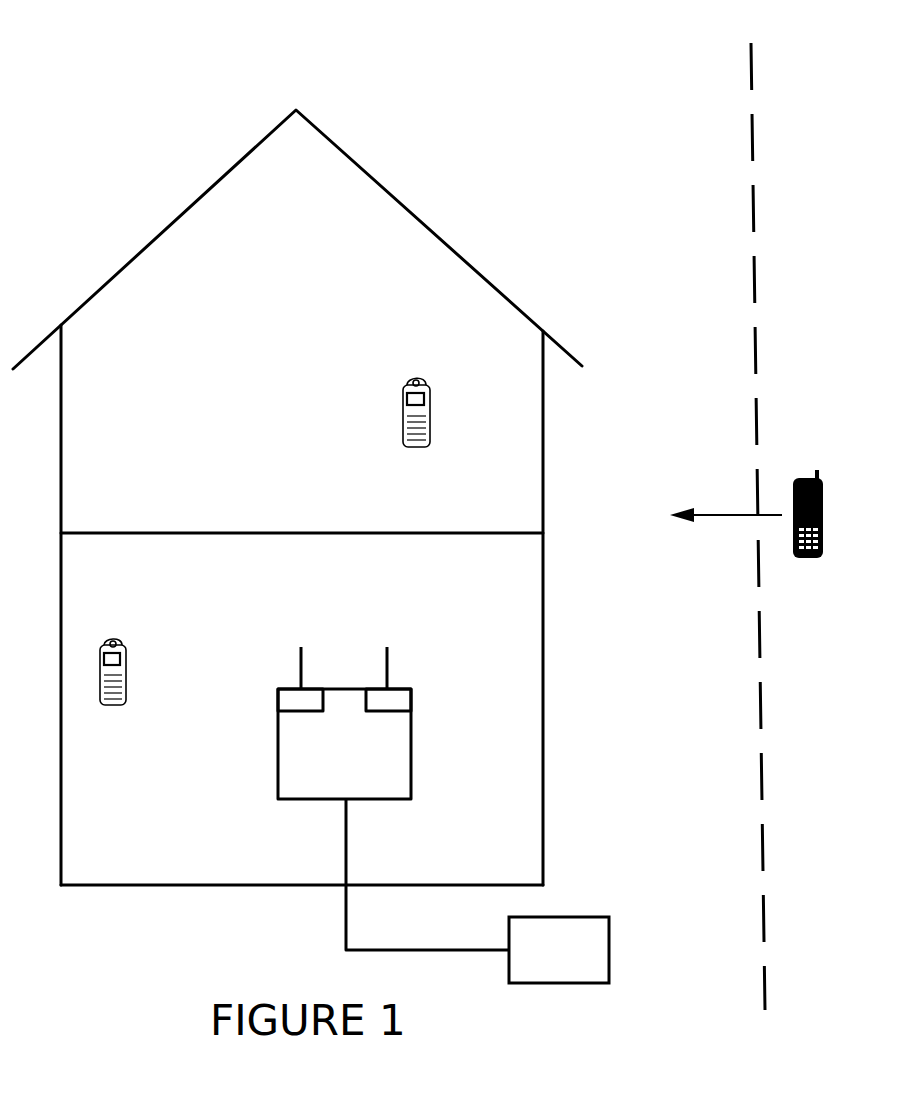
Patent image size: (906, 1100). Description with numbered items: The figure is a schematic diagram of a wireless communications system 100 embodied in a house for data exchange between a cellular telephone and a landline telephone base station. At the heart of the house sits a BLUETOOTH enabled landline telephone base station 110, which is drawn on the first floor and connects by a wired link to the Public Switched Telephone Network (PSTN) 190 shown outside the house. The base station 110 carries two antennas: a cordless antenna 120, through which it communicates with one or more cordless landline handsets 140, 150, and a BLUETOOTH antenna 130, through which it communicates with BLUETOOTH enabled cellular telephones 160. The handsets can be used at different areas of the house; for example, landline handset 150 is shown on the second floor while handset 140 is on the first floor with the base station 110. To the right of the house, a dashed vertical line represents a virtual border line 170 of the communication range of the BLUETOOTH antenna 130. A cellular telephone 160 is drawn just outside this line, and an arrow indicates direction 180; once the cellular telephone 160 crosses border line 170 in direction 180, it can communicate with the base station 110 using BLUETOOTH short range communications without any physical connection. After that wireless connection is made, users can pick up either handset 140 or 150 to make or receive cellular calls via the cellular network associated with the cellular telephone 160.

The wireless communications system 100 is at (455, 80).
The landline telephone base station 110 is at (411, 727).
The cordless antenna 120 is at (300, 662).
The BLUETOOTH antenna 130 is at (388, 666).
The cordless landline handset 140 is at (124, 657).
The cordless landline handset 150 is at (401, 414).
The cellular telephone 160 is at (866, 483).
The border line 170 is at (753, 178).
The direction 180 is at (702, 516).
The Public Switched Telephone Network 190 is at (610, 945).